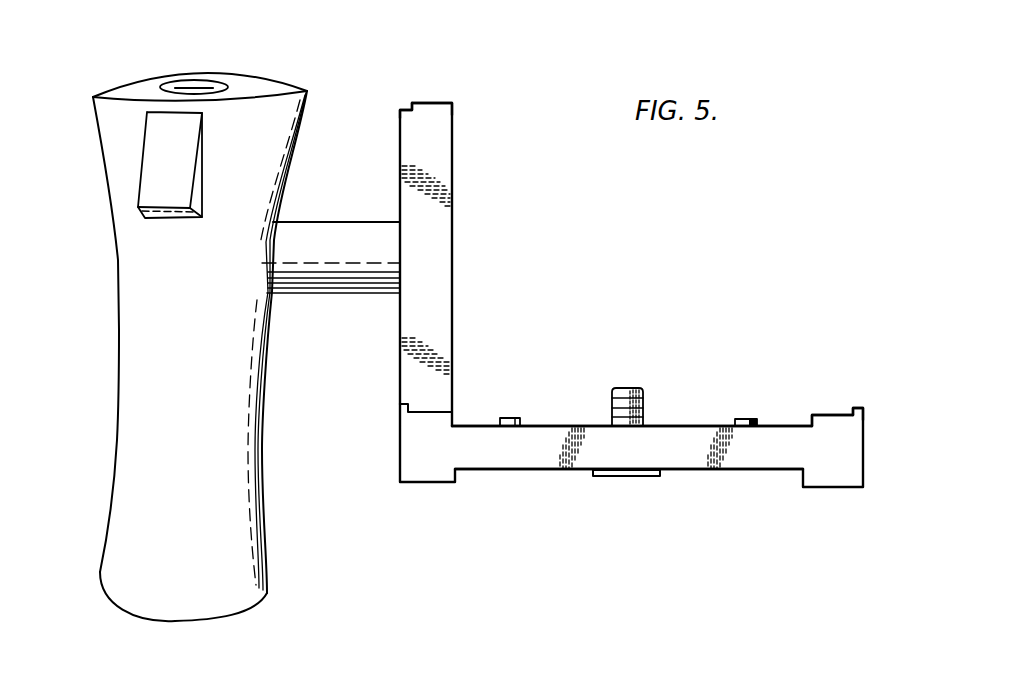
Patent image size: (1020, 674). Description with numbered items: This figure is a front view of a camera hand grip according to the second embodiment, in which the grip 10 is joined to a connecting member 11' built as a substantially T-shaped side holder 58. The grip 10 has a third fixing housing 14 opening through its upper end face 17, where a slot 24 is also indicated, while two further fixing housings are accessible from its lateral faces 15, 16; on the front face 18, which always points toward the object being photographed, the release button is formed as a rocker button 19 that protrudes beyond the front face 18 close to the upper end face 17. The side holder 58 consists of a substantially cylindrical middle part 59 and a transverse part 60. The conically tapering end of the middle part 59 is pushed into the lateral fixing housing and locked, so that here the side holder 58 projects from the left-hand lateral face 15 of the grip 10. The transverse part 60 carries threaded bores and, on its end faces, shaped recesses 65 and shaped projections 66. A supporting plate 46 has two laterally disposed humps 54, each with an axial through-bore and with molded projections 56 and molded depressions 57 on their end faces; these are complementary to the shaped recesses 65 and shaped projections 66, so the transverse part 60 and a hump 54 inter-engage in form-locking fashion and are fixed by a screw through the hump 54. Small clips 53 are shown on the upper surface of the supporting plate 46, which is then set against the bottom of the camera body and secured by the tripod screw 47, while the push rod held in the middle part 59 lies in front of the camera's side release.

The grip 10 is at (100, 307).
The connecting member 11' is at (323, 182).
The third fixing housing 14 is at (188, 83).
The lateral face 15 is at (248, 435).
The lateral face 16 is at (118, 430).
The upper end face 17 is at (137, 92).
The front face 18 is at (132, 550).
The rocker button 19 is at (155, 175).
The slot in opening 24 is at (220, 80).
The supporting plate 46 is at (543, 460).
The tripod screw 47 is at (627, 388).
The clips 53 is at (508, 417).
The humps 54 is at (425, 418).
The molded projections 56 is at (860, 408).
The molded depressions 57 is at (828, 413).
The side holder 58 is at (383, 198).
The middle part 59 is at (310, 278).
The transverse part 60 is at (452, 175).
The shaped recesses 65 is at (407, 110).
The shaped projections 66 is at (432, 103).